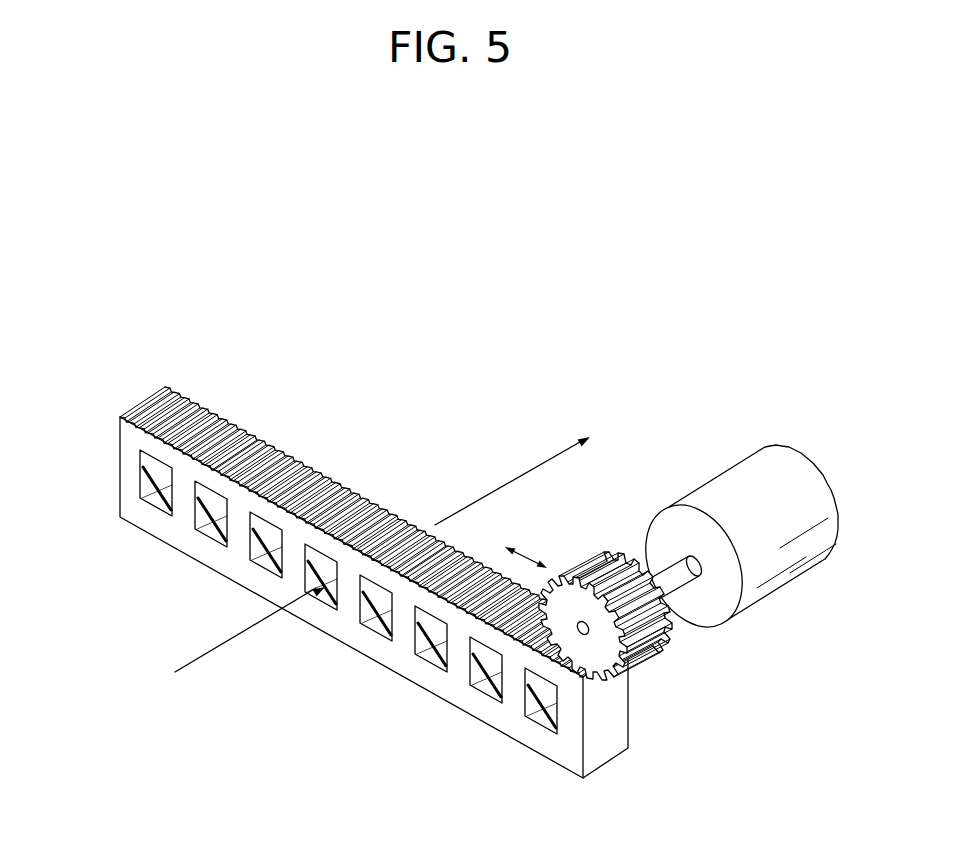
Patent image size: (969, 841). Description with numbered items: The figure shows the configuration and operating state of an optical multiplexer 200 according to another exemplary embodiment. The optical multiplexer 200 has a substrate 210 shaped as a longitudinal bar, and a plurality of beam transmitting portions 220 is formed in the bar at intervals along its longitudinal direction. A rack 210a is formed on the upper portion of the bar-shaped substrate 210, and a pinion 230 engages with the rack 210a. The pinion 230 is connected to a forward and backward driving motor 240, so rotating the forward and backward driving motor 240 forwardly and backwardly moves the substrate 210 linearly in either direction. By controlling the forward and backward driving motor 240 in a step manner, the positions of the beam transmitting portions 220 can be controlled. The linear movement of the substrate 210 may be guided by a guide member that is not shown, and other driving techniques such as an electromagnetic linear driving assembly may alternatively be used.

The optical multiplexer 200 is at (134, 329).
The substrate 210 is at (120, 432).
The rack 210a is at (220, 418).
The beam transmitting portions 220 is at (328, 600).
The pinion 230 is at (647, 650).
The forward and backward driving motor 240 is at (748, 478).